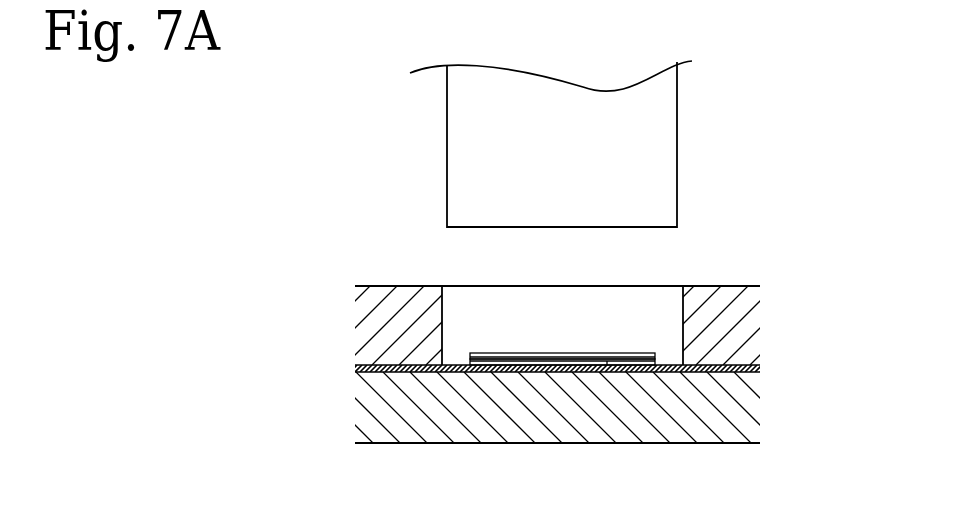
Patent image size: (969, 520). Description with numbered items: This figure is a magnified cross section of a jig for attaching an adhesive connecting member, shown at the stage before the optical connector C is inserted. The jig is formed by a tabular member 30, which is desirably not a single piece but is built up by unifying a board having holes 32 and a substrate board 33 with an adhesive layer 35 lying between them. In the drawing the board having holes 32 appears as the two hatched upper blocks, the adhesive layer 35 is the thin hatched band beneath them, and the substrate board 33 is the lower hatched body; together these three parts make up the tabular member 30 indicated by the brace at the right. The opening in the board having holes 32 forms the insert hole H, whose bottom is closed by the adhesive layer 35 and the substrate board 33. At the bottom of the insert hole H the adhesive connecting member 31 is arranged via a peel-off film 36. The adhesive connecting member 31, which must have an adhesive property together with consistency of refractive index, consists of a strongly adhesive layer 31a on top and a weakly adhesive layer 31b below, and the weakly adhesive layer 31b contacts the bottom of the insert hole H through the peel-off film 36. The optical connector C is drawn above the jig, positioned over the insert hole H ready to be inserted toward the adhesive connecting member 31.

The tabular member 30 is at (578, 365).
The adhesive connecting member 31 is at (558, 298).
The strongly adhesive layer 31a is at (587, 353).
The weakly adhesive layer 31b is at (560, 358).
The board having holes 32 is at (408, 298).
The substrate board 33 is at (410, 435).
The adhesive layer 35 is at (479, 373).
The peel-off film 36 is at (610, 373).
The optical connector C is at (677, 138).
The insert hole H is at (617, 285).